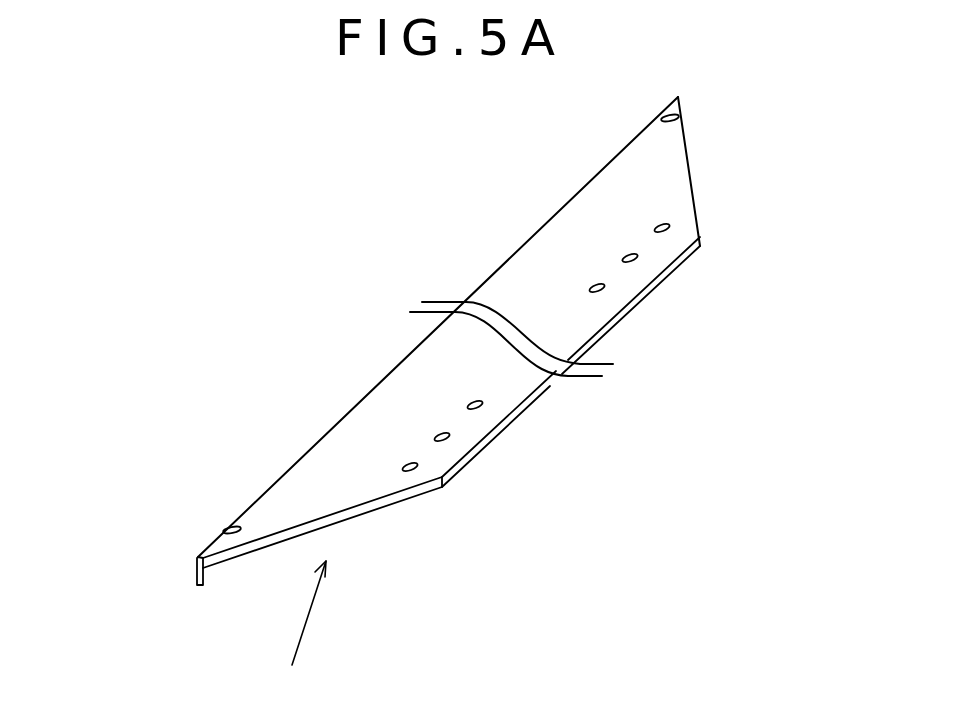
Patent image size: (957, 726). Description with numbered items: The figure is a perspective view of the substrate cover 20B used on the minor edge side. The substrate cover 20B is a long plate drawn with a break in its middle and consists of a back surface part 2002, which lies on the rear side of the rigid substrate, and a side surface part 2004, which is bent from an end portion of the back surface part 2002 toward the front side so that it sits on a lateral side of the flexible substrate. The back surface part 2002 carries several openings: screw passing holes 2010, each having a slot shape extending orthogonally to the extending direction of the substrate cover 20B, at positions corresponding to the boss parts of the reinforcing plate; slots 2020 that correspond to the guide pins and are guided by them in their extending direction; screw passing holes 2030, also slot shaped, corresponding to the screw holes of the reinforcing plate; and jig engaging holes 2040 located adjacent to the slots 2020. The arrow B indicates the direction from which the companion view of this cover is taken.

The substrate cover 20B is at (292, 237).
The back surface part 2002 is at (345, 432).
The side surface part 2004 is at (196, 576).
The screw passing holes 2010 is at (661, 113).
The slots 2020 is at (604, 286).
The screw passing holes 2030 is at (669, 226).
The jig engaging holes 2040 is at (637, 255).
The arrow B is at (303, 632).